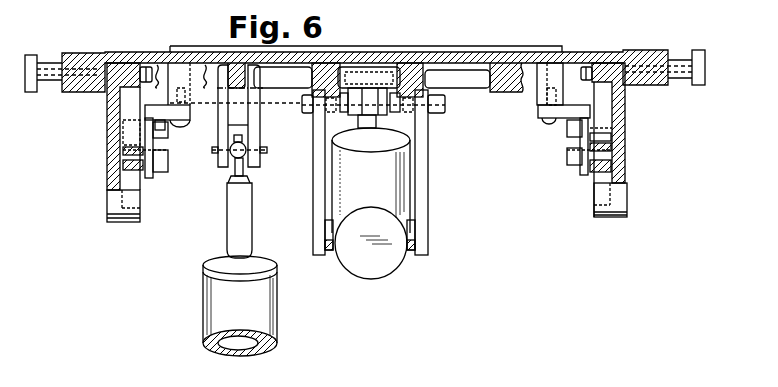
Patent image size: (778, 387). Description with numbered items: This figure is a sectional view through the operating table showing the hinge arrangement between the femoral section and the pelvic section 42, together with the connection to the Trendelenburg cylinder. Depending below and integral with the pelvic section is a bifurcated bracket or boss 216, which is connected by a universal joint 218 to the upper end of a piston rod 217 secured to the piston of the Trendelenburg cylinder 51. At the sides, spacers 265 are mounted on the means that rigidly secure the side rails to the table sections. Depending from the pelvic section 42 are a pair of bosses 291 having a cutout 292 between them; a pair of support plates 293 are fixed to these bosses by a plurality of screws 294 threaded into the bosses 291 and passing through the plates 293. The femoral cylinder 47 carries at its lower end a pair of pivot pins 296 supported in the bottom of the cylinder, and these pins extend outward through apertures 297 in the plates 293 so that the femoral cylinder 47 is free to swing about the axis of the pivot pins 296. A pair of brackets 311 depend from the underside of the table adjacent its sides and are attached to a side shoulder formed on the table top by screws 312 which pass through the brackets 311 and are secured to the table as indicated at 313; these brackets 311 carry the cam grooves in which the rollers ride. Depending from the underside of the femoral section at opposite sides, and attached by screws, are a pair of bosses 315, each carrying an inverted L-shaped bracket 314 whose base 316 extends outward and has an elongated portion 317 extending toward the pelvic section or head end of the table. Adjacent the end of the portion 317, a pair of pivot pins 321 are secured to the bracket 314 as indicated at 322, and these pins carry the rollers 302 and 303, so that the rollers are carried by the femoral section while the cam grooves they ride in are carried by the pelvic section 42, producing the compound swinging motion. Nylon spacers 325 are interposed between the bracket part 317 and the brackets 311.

The pelvic section 42 is at (457, 56).
The spacers 265 is at (50, 63).
The screws 312 is at (143, 67).
The brackets 311 is at (107, 125).
The roller 302 is at (616, 108).
The bifurcated bracket or boss 216 is at (249, 119).
The universal joint 218 is at (258, 150).
The piston rod 217 is at (247, 213).
The Trendelenburg cylinder 51 is at (240, 306).
The bosses 291 is at (307, 81).
The cutout 292 is at (380, 72).
The screws 294 is at (437, 106).
The support plates 293 is at (318, 172).
The pivot pins 296 is at (421, 228).
The apertures 297 is at (427, 241).
The femoral cylinder 47 is at (371, 197).
The bosses 315 is at (534, 97).
The base 316 is at (540, 111).
The elongated portion 317 is at (583, 176).
The bracket 314 is at (572, 121).
The securing means 322 is at (573, 165).
The nylon spacers 325 is at (597, 139).
The pivot pins 321 is at (598, 157).
The roller 303 is at (600, 172).
The securing location 313 is at (630, 60).